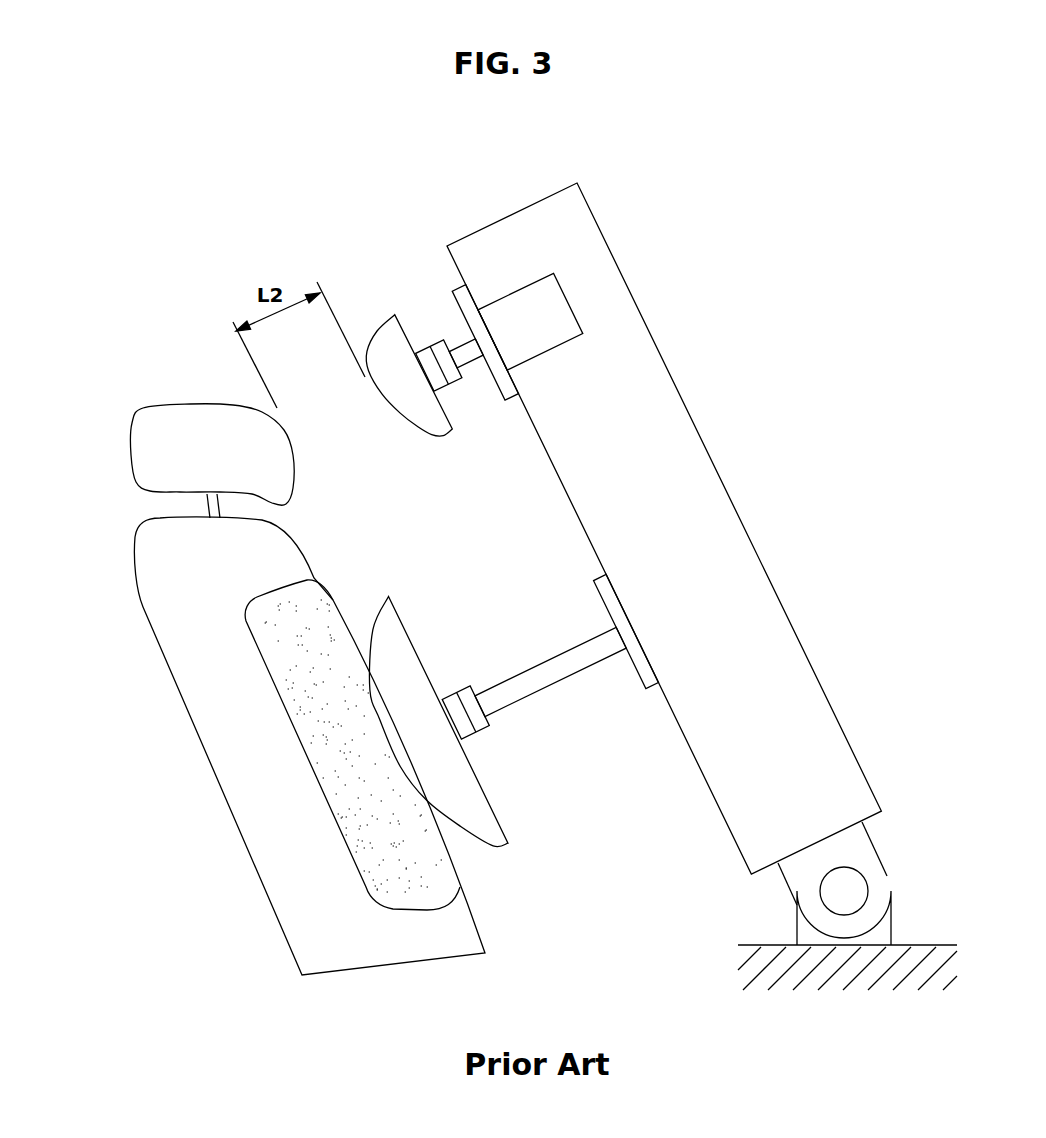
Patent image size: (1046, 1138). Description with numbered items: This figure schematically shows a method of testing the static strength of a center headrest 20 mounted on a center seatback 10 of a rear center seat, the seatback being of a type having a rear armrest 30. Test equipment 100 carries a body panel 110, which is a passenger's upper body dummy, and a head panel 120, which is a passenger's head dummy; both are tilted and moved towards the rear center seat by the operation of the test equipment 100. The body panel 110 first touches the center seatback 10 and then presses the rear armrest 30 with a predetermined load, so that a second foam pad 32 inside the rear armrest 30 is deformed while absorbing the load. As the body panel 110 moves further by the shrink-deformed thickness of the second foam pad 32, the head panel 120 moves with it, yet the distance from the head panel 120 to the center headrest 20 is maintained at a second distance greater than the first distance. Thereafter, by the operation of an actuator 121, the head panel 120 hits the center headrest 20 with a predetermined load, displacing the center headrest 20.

The center seatback 10 is at (160, 635).
The center headrest 20 is at (175, 418).
The rear armrest 30 is at (336, 604).
The second foam pad 32 is at (333, 650).
The test equipment 100 is at (681, 390).
The body panel 110 is at (467, 782).
The head panel 120 is at (393, 314).
The actuator 121 is at (521, 306).